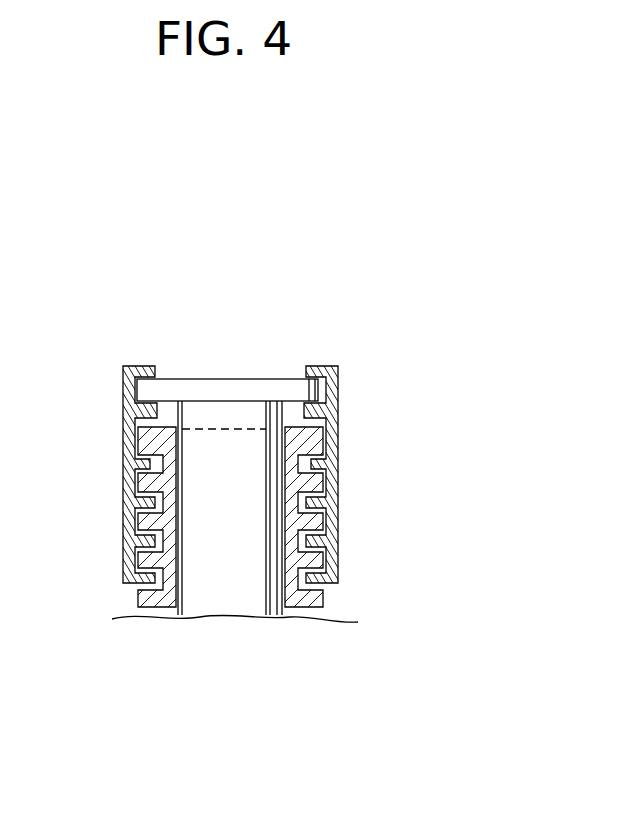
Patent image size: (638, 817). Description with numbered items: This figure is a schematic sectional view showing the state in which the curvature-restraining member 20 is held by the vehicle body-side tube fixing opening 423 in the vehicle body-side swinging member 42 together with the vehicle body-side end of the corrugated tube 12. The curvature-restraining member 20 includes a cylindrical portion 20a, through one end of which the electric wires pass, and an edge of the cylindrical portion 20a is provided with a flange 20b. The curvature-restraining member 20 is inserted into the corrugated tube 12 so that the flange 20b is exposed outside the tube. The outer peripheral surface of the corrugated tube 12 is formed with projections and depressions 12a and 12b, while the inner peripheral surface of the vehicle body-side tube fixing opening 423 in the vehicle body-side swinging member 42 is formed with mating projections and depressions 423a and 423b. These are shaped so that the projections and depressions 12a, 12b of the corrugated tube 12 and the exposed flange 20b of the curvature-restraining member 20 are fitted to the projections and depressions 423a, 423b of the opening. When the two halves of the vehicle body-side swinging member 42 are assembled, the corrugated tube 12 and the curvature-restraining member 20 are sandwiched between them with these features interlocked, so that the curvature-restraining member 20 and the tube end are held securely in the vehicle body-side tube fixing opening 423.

The corrugated tube 12 is at (251, 556).
The projections and depressions 12a is at (305, 610).
The projections and depressions 12b is at (326, 555).
The curvature-restraining member 20 is at (173, 453).
The cylindrical portion 20a is at (176, 488).
The flange 20b is at (263, 378).
The vehicle body-side swinging member 42 is at (233, 450).
The vehicle body-side tube fixing opening 423 is at (157, 372).
The projections and depressions 423a is at (340, 422).
The projections and depressions 423b is at (283, 503).